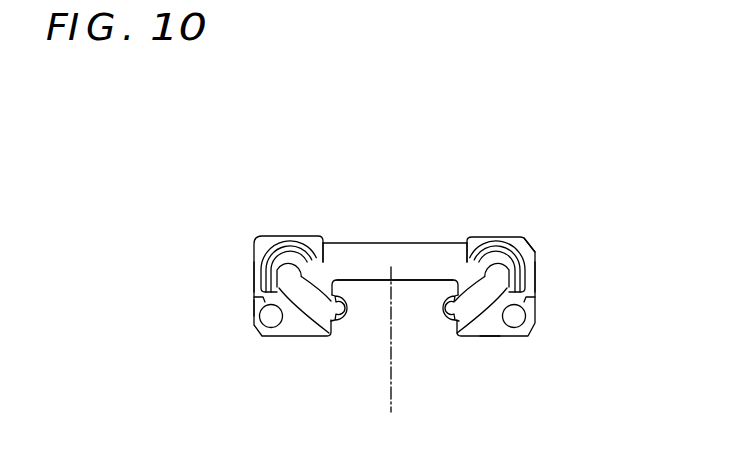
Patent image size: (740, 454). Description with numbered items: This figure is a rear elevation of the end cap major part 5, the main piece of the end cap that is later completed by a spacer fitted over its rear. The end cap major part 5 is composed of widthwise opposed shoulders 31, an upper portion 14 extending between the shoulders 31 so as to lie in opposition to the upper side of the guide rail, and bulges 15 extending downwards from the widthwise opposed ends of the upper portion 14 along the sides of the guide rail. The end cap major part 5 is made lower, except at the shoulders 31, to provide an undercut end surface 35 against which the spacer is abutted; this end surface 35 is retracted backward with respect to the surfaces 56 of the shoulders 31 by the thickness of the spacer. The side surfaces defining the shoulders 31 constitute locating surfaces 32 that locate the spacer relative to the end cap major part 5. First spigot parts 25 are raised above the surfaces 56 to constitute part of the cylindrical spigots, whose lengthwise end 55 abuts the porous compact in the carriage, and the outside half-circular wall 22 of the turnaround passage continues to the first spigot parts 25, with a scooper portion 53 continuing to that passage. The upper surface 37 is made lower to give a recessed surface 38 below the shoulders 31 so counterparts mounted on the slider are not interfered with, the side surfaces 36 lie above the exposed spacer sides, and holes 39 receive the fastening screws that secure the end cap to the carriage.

The end cap major part 5 is at (522, 230).
The upper portion 14 is at (411, 248).
The bulges 15 is at (261, 302).
The outside half-circular wall 22 is at (312, 306).
The first spigot parts 25 is at (279, 249).
The shoulders 31 is at (263, 247).
The locating surfaces 32 is at (330, 242).
The undercut end surface 35 is at (467, 330).
The side surfaces 36 is at (254, 276).
The upper surface 37 is at (313, 241).
The recessed surface 38 is at (390, 262).
The holes 39 is at (272, 321).
The scooper portion 53 is at (352, 330).
The lengthwise end 55 is at (297, 247).
The surfaces 56 is at (260, 258).